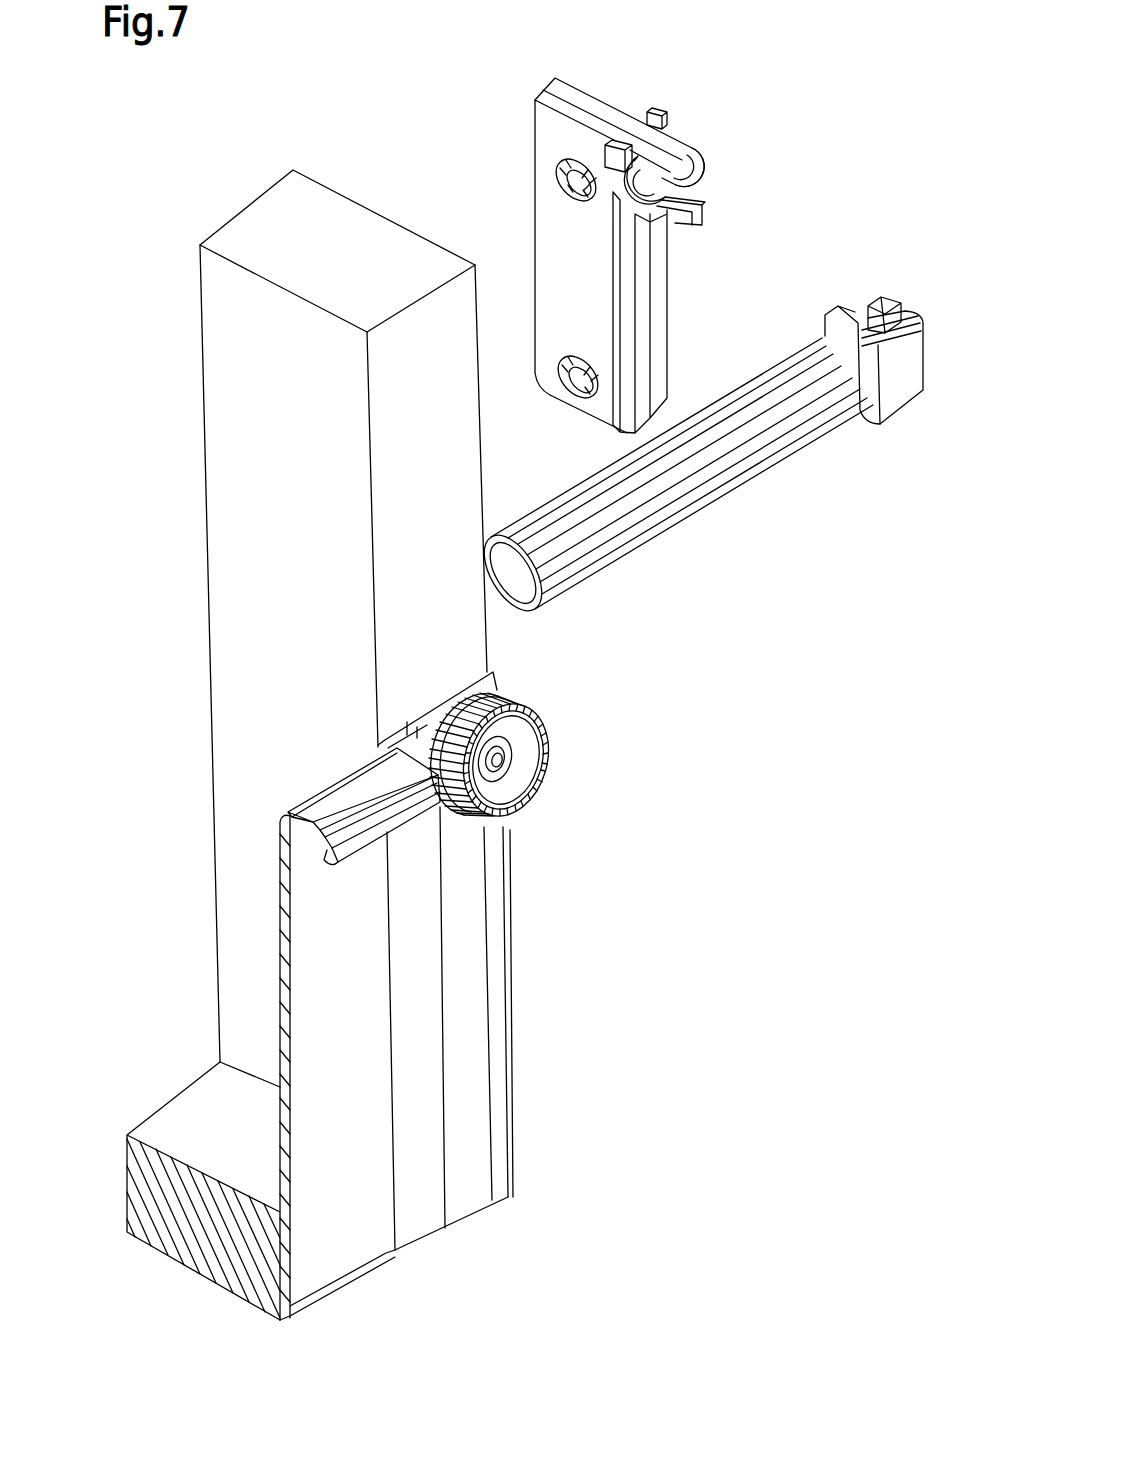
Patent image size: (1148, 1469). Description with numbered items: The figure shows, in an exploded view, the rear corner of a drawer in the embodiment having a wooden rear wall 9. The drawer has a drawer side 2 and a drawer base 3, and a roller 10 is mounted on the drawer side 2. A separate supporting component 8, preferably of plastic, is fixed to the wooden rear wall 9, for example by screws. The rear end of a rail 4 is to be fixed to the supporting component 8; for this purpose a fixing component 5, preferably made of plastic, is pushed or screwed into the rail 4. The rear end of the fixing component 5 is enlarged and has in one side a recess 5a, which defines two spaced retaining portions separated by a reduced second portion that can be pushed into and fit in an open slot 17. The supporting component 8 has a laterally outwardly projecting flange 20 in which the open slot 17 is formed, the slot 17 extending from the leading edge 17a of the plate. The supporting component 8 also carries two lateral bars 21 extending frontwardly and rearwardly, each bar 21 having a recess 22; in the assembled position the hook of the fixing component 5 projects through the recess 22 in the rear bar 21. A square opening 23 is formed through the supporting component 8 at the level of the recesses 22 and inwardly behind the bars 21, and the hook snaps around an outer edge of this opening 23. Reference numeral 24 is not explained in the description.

The drawer side 2 is at (370, 1093).
The drawer base 3 is at (196, 1148).
The rail 4 is at (723, 473).
The fixing component 5 is at (877, 411).
The recess 5a is at (884, 320).
The supporting component 8 is at (576, 216).
The wooden rear wall 9 is at (220, 623).
The roller 10 is at (520, 797).
The open slot 17 is at (694, 203).
The leading edge 17a is at (678, 228).
The flange 20 is at (708, 163).
The lateral bar 21 is at (664, 258).
The recess 22 is at (628, 182).
The square opening 23 is at (617, 178).
The bore 24 is at (614, 178).